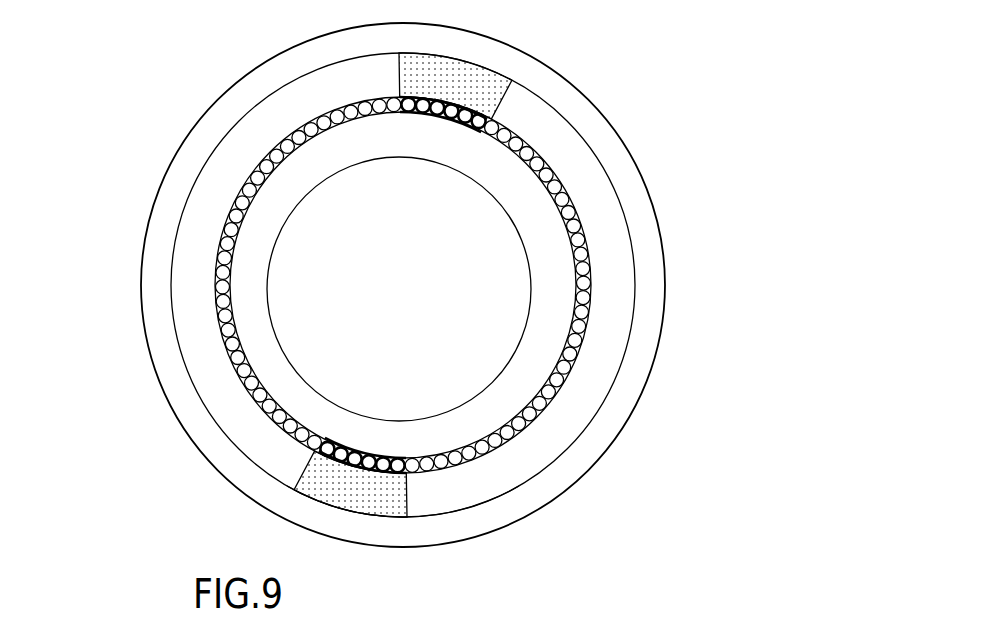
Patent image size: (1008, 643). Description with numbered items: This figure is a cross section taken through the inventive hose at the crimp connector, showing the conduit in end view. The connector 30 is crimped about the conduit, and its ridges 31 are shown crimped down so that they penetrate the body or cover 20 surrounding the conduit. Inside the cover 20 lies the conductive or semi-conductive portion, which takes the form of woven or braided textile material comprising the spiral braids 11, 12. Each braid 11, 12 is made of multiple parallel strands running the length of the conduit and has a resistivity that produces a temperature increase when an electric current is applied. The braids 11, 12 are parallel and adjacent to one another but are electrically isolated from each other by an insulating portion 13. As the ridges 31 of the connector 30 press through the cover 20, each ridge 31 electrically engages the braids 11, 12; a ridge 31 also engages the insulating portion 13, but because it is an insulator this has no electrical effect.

The spiral braid 11 is at (590, 302).
The spiral braid 12 is at (220, 315).
The insulating portion 13 is at (445, 97).
The body 20 is at (385, 478).
The connector 30 is at (655, 213).
The ridges 31 is at (583, 170).